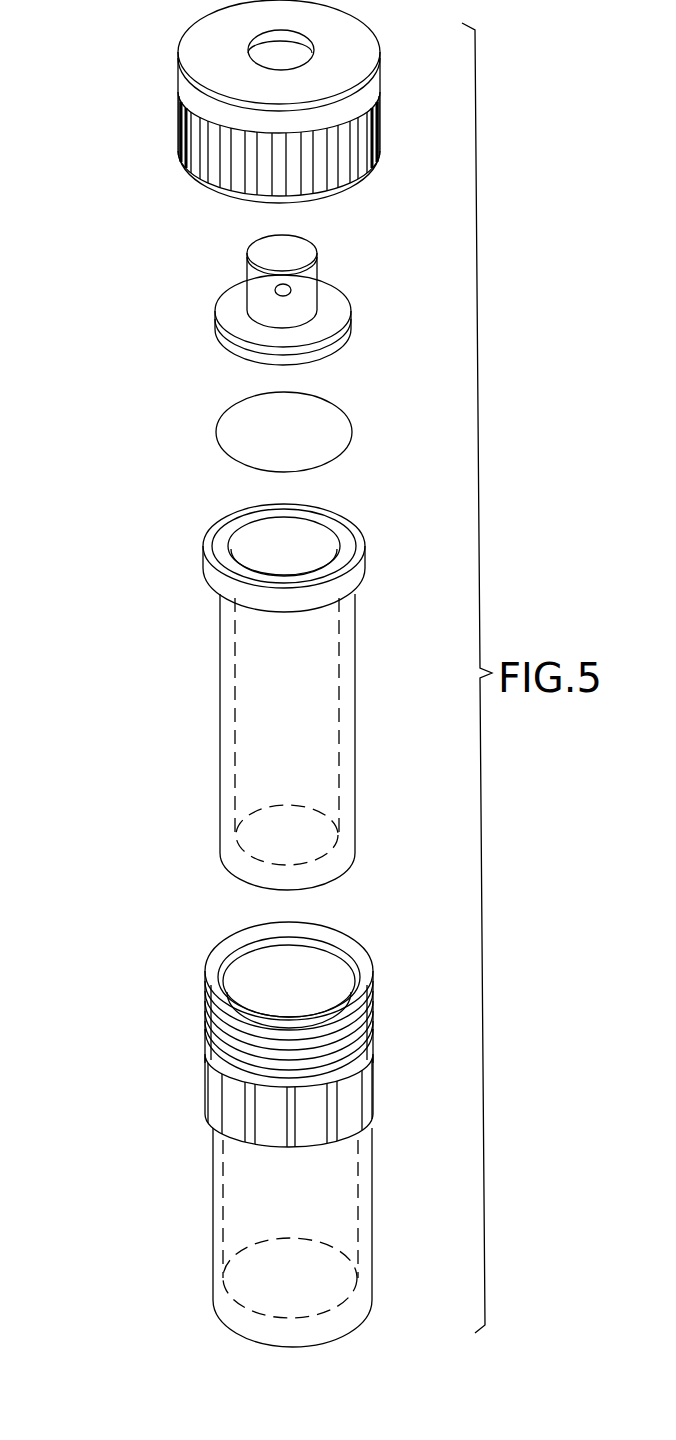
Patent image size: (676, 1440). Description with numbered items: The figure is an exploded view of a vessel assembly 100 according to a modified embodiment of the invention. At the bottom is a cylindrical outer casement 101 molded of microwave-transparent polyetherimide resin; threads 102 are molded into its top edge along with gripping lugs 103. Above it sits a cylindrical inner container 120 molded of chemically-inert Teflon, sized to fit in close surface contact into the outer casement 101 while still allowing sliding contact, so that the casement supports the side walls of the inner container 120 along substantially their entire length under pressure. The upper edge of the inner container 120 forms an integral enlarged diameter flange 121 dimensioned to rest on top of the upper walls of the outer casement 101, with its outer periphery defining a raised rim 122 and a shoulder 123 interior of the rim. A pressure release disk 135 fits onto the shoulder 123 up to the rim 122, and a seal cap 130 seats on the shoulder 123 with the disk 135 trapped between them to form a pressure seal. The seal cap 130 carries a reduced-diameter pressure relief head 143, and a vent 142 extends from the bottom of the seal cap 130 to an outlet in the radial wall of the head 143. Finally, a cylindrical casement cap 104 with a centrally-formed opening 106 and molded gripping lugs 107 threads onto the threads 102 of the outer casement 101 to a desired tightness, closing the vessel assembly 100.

The vessel assembly 100 is at (90, 994).
The cylindrical outer casement 101 is at (372, 1180).
The threads 102 is at (373, 1017).
The gripping lugs 103 is at (332, 1122).
The cylindrical casement cap 104 is at (370, 42).
The centrally-formed opening 106 is at (260, 58).
The molded gripping lugs 107 is at (360, 140).
The cylindrical inner container 120 is at (355, 765).
The enlarged diameter flange 121 is at (365, 563).
The raised rim 122 is at (358, 542).
The shoulder 123 is at (337, 535).
The seal cap 130 is at (232, 300).
The pressure release disk 135 is at (235, 435).
The vent 142 is at (292, 300).
The pressure relief head 143 is at (273, 262).